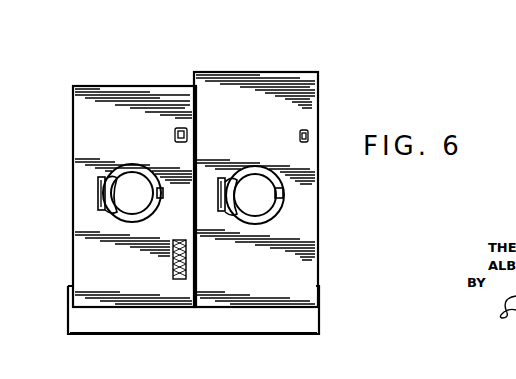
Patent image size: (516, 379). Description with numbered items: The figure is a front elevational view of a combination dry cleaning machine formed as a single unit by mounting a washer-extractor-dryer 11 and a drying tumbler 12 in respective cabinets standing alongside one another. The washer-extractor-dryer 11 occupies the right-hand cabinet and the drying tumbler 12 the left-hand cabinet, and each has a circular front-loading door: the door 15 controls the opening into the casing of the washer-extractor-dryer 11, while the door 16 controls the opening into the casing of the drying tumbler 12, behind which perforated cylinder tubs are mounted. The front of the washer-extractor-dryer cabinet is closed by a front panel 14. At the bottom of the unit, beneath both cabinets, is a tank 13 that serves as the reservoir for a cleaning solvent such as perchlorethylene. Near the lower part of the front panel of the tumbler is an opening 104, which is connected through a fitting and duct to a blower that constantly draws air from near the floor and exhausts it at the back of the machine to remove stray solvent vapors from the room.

The washer-extractor-dryer 11 is at (262, 66).
The drying tumbler 12 is at (116, 82).
The tank 13 is at (300, 325).
The front panel 14 is at (318, 92).
The front-loading door 15 is at (268, 191).
The front-loading door 16 is at (118, 171).
The opening 104 is at (173, 260).